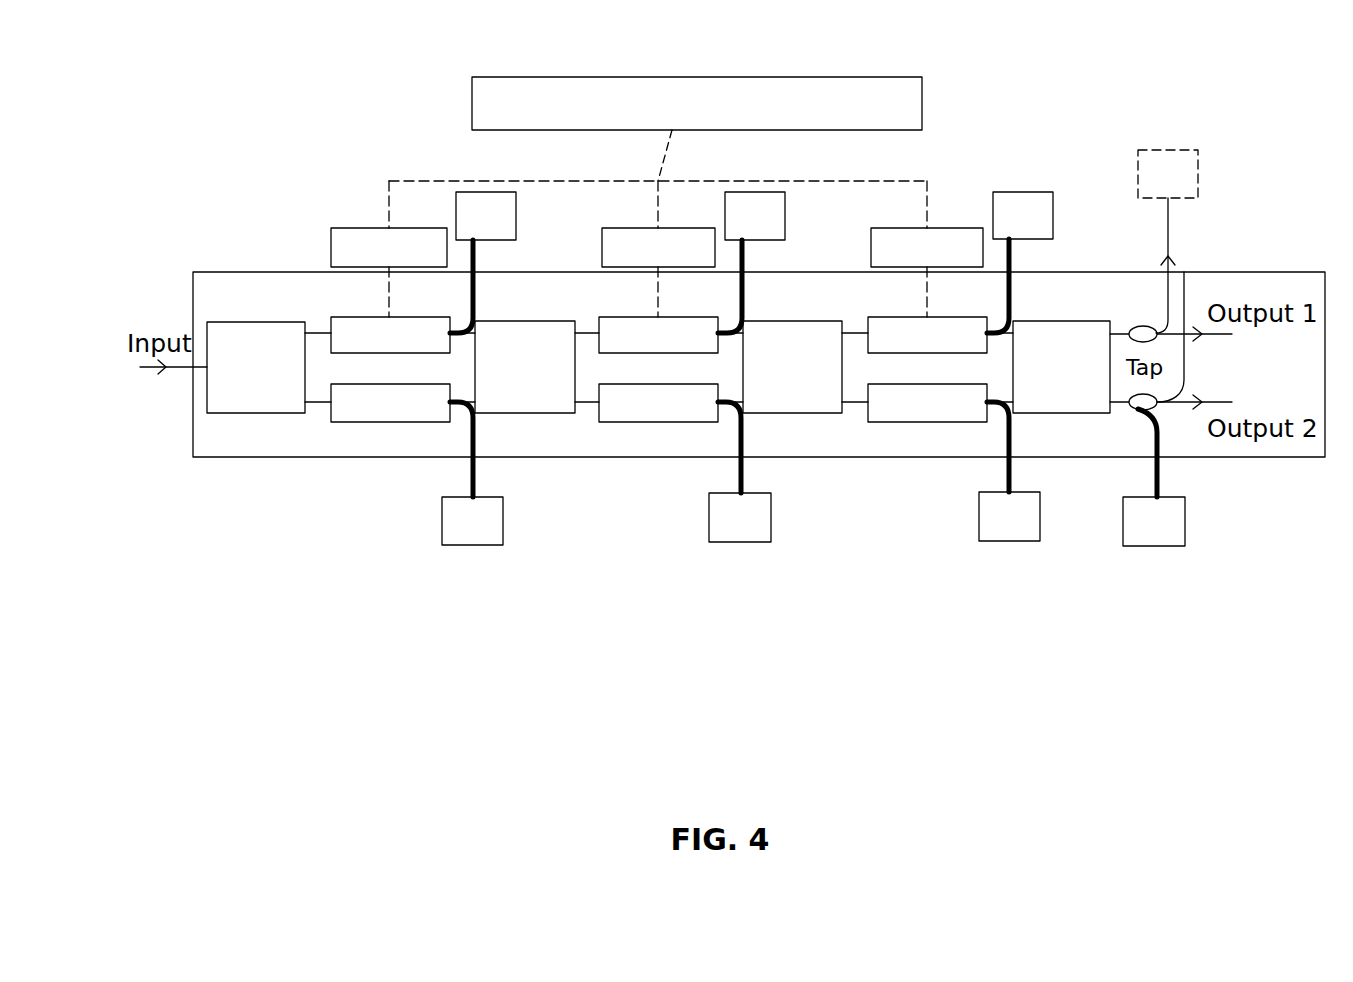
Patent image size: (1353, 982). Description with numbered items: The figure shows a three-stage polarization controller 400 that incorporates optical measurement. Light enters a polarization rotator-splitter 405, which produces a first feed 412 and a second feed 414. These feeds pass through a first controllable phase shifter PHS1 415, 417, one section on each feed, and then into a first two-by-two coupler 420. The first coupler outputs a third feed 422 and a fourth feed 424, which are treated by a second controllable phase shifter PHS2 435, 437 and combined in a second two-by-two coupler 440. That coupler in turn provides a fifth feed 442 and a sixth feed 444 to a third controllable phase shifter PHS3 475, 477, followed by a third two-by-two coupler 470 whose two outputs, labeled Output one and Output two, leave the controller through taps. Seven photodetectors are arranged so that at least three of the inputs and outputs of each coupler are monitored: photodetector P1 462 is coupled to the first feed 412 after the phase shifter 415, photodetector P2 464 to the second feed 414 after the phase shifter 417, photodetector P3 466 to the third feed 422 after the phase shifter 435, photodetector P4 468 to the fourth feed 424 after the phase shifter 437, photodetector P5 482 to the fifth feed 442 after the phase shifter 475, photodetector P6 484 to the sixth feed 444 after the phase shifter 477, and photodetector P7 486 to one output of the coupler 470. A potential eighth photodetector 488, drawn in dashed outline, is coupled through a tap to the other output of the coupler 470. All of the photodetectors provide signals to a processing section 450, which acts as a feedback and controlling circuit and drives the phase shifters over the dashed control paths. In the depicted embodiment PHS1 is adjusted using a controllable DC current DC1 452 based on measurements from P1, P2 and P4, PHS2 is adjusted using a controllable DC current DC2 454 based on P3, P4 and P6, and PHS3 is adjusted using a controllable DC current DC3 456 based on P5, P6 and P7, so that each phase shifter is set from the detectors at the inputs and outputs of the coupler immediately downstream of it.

The three-stage polarization controller 400 is at (1248, 272).
The polarization rotator-splitter 405 is at (238, 322).
The first feed 412 is at (318, 333).
The second feed 414 is at (319, 403).
The first controllable phase shifter PHS1 415 is at (342, 317).
The first controllable phase shifter PHS1 417 is at (405, 422).
The first 2×2 coupler 420 is at (553, 321).
The third feed 422 is at (590, 333).
The fourth feed 424 is at (587, 403).
The second controllable phase shifter PHS2 435 is at (707, 317).
The second controllable phase shifter PHS2 437 is at (648, 422).
The second 2×2 coupler 440 is at (807, 413).
The fifth feed 442 is at (862, 333).
The sixth feed 444 is at (853, 403).
The processing section 450 is at (858, 77).
The controllable DC current DC1 452 is at (362, 228).
The controllable DC current DC2 454 is at (627, 228).
The controllable DC current DC3 456 is at (947, 228).
The photodetector P1 462 is at (470, 192).
The photodetector P2 464 is at (485, 545).
The photodetector P3 466 is at (767, 193).
The photodetector P4 468 is at (755, 542).
The third 2×2 coupler 470 is at (1100, 321).
The third controllable phase shifter PHS3 475 is at (979, 317).
The third controllable phase shifter PHS3 477 is at (947, 422).
The photodetector P5 482 is at (1028, 192).
The photodetector P6 484 is at (1022, 541).
The photodetector P7 486 is at (1170, 546).
The eighth photodetector P8 488 is at (1180, 150).